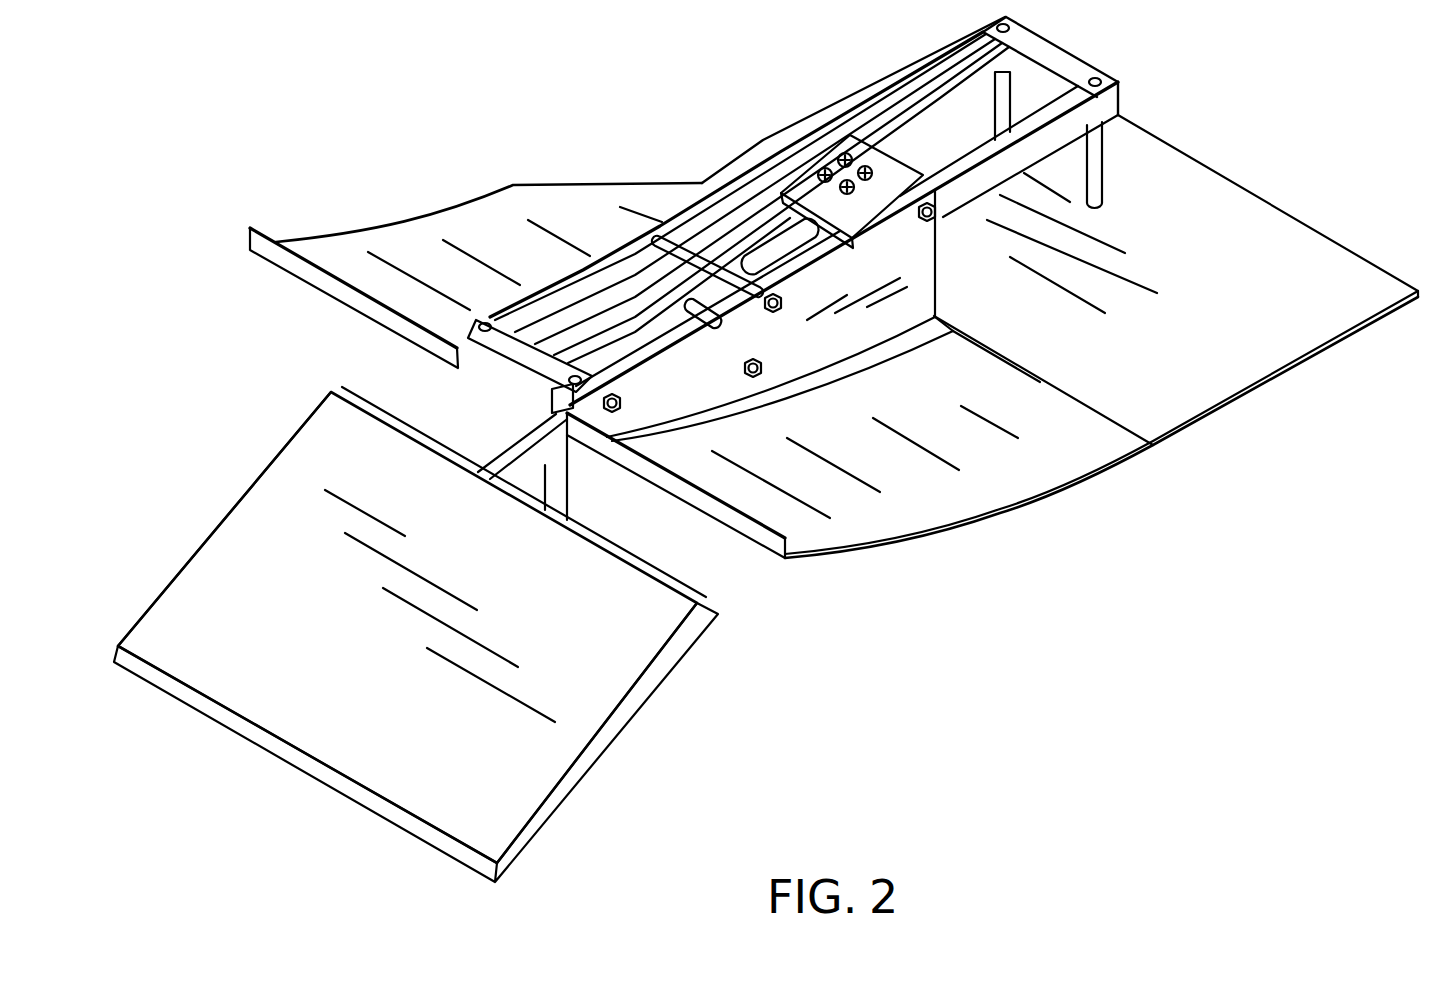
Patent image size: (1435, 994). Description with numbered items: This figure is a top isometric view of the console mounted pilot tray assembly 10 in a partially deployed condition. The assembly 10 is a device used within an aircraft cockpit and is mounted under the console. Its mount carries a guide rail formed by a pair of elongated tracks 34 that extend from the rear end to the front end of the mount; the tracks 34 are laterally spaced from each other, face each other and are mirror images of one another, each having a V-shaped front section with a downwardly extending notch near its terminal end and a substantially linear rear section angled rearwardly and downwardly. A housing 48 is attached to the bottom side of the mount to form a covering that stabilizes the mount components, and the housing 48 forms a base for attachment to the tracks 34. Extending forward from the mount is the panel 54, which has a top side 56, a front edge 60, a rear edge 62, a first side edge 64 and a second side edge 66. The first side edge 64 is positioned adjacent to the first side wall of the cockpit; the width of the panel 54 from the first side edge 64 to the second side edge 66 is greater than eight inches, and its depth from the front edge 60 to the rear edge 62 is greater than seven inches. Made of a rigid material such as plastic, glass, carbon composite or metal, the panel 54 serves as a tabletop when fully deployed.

The console mounted pilot tray assembly 10 is at (1040, 567).
The elongated tracks 34 is at (590, 306).
The housing 48 is at (693, 465).
The panel 54 is at (497, 883).
The top side 56 is at (482, 766).
The front edge 60 is at (312, 780).
The rear edge 62 is at (410, 433).
The first side edge 64 is at (172, 572).
The second side edge 66 is at (647, 703).